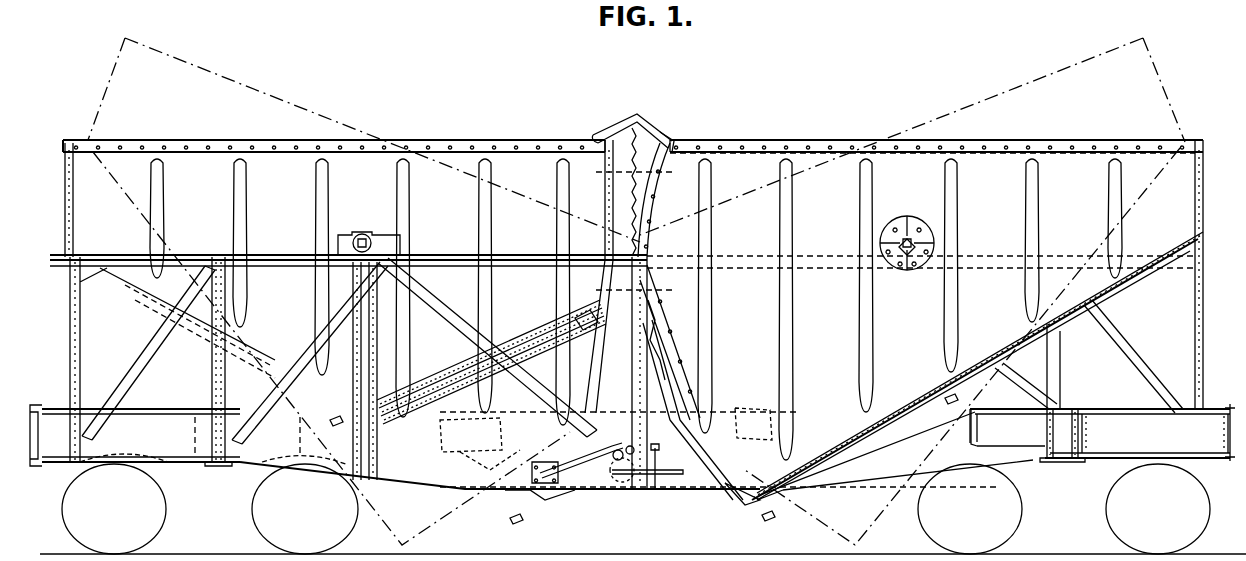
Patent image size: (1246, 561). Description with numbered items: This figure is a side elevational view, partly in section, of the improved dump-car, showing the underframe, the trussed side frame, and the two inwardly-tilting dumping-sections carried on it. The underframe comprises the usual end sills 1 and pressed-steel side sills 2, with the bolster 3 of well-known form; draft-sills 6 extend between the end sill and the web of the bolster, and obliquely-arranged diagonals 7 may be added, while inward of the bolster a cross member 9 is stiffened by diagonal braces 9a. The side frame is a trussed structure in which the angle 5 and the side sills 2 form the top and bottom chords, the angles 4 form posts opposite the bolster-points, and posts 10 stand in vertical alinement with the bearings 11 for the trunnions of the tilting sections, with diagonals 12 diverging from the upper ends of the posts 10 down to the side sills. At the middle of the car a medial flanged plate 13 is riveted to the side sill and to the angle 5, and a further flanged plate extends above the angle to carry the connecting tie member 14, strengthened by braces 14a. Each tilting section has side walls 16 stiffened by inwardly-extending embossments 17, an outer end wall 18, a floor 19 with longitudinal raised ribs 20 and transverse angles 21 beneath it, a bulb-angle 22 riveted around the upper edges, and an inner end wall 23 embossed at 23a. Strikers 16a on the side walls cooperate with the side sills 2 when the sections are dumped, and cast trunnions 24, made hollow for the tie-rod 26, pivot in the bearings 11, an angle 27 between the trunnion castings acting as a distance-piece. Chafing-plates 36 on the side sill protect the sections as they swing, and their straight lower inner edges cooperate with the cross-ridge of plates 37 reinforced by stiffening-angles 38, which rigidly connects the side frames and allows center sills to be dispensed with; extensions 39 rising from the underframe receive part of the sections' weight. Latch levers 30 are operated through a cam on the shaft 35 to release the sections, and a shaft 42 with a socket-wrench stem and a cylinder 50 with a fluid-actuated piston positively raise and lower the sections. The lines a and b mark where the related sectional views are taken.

The end sill 1 is at (36, 464).
The side sill 2 is at (537, 454).
The bolster 3 is at (215, 464).
The angle post 4 is at (212, 376).
The angle 5 is at (278, 256).
The draft-sill 6 is at (1110, 458).
The diagonal brace 7 is at (1125, 412).
The cross member 9 is at (970, 414).
The diagonal brace 9a is at (1011, 432).
The post 10 is at (378, 448).
The bearing 11 is at (396, 245).
The diagonal 12 is at (316, 298).
The medial flanged plate 13 is at (362, 236).
The connecting tie member 14 is at (624, 124).
The brace 14a is at (662, 126).
The side wall 16 is at (629, 183).
The striker 16a is at (545, 410).
The embossment 17 is at (316, 178).
The outer end wall 18 is at (1196, 189).
The floor 19 is at (912, 396).
The raised rib 20 is at (993, 346).
The transverse angle 21 is at (335, 416).
The bulb-angle 22 is at (440, 148).
The inner end wall 23 is at (654, 190).
The embossment 23a is at (650, 236).
The trunnion 24 is at (914, 232).
The tie-rod 26 is at (900, 258).
The angle 27 is at (915, 243).
The lever 30 is at (662, 478).
The shaft 35 is at (565, 490).
The chafing-plate 36 is at (606, 438).
The cross-ridge plate 37 is at (700, 486).
The stiffening-angle 38 is at (730, 498).
The extension 39 is at (156, 335).
The shaft 42 is at (654, 490).
The cylinder 50 is at (620, 484).
The section line a a is at (632, 172).
The section line b b is at (634, 290).